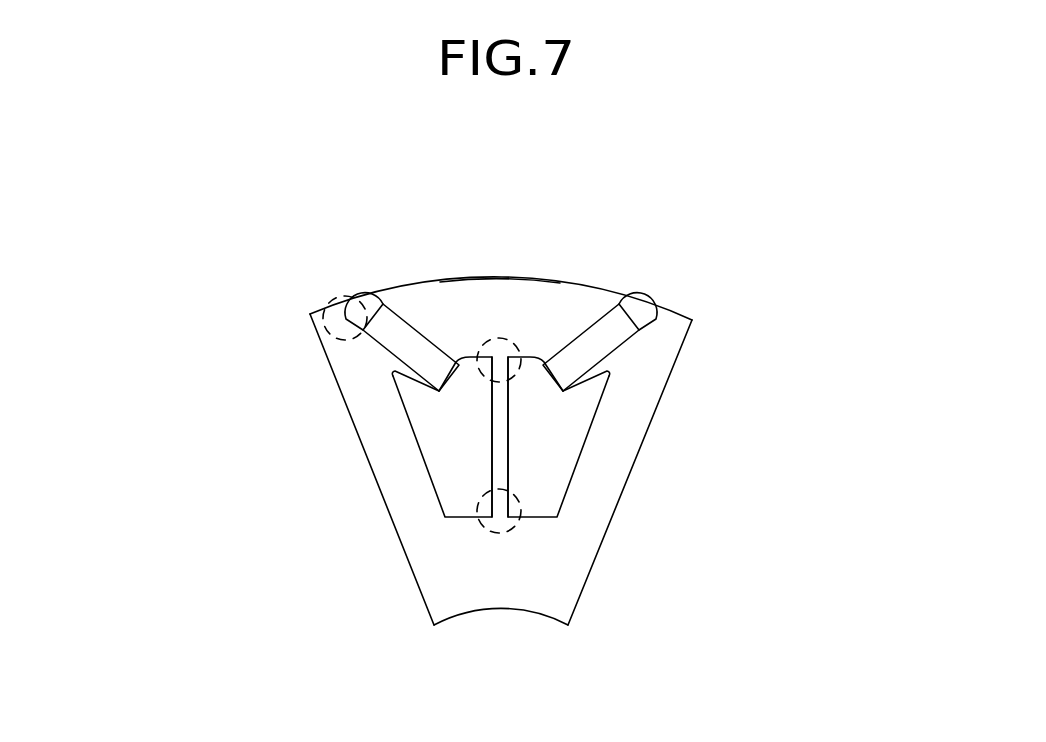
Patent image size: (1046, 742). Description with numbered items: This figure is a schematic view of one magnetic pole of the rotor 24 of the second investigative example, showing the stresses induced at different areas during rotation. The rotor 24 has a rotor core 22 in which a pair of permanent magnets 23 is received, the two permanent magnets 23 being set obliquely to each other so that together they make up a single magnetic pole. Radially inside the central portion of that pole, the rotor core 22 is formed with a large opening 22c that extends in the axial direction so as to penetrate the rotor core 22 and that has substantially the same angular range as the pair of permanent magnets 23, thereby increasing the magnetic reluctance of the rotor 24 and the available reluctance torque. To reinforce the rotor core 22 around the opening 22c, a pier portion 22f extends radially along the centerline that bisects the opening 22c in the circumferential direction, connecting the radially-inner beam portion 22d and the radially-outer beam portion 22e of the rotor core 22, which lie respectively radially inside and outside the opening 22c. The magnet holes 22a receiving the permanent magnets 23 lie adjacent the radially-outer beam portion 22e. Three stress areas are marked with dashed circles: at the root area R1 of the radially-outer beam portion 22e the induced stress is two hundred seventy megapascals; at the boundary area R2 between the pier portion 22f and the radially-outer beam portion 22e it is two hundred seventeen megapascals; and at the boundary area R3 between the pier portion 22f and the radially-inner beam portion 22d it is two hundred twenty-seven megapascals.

The rotor core 22 is at (317, 338).
The magnet insertion hole 22a is at (356, 300).
The opening 22c is at (423, 450).
The radially-inner beam portion 22d is at (502, 577).
The radially-outer beam portion 22e is at (530, 312).
The pier portion 22f is at (508, 450).
The permanent magnet 23 is at (417, 330).
The rotor 24 is at (454, 257).
The root area R1 is at (323, 295).
The boundary area R2 is at (501, 338).
The boundary area R3 is at (510, 532).